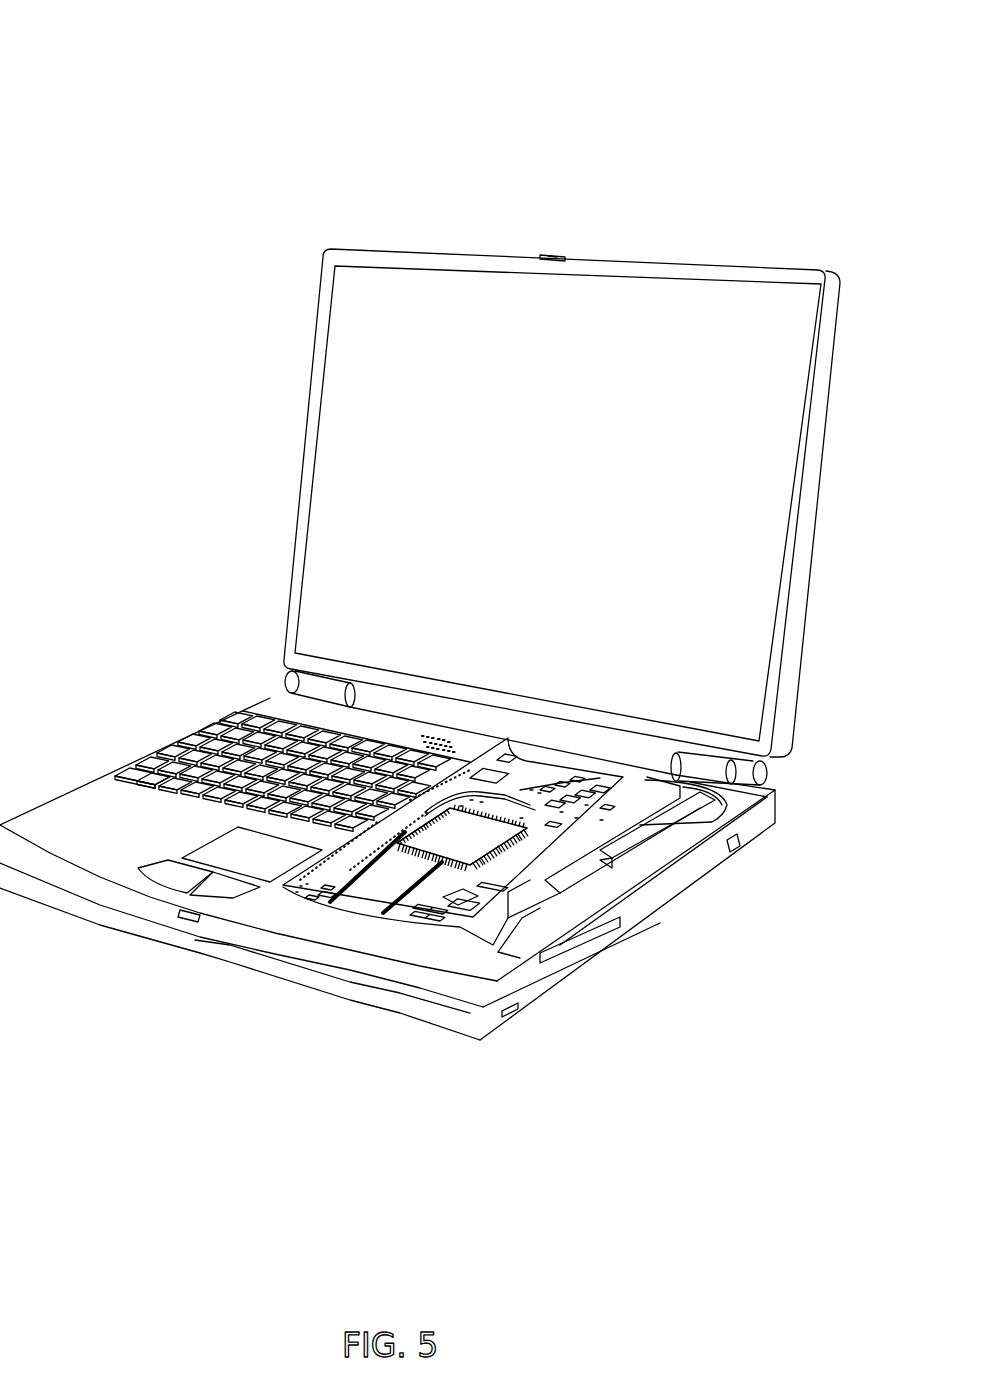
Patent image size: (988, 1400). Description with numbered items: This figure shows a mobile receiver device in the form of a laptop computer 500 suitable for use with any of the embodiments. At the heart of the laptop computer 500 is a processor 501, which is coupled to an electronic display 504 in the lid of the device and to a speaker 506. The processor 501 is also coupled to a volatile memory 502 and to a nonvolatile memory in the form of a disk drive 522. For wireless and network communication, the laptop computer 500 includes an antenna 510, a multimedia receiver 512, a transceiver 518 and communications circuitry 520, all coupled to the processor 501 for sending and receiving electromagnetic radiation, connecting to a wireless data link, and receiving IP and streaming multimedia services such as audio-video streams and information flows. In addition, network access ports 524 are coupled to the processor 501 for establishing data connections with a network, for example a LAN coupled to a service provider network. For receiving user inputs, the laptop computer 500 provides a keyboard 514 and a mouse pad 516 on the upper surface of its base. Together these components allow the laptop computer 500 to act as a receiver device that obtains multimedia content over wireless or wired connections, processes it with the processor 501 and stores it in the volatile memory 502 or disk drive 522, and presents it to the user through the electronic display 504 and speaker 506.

The laptop computer 500 is at (124, 58).
The processor 501 is at (480, 829).
The volatile memory 502 is at (402, 871).
The electronic display 504 is at (762, 689).
The speaker 506 is at (422, 742).
The antenna 510 is at (324, 283).
The multimedia receiver 512 is at (317, 900).
The keyboard 514 is at (168, 760).
The mouse pad 516 is at (212, 855).
The transceiver 518 is at (460, 904).
The communications circuitry 520 is at (573, 828).
The disk drive 522 is at (523, 928).
The network access ports 524 is at (657, 820).